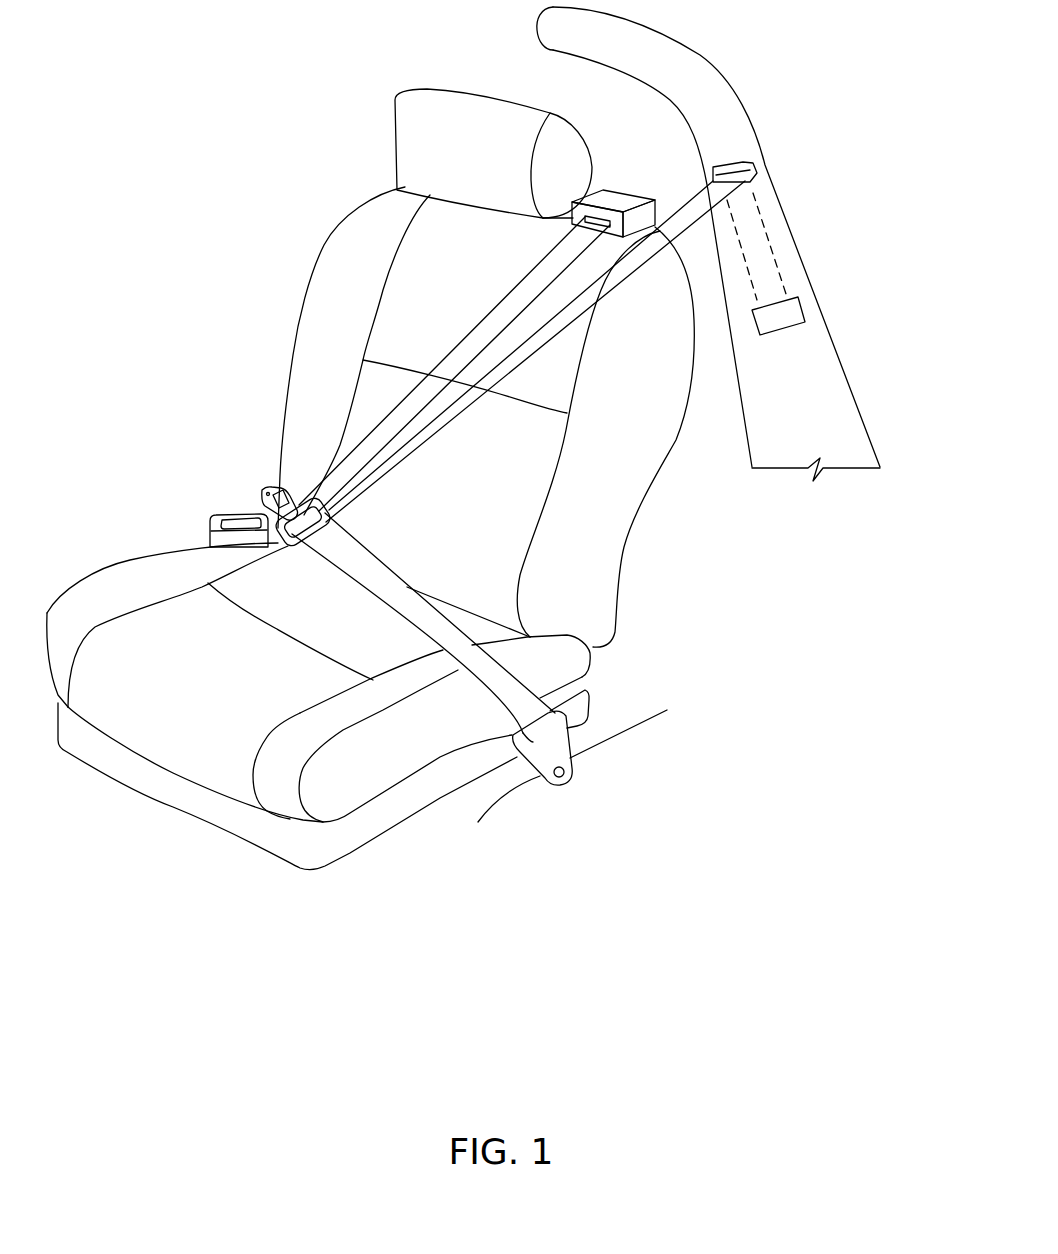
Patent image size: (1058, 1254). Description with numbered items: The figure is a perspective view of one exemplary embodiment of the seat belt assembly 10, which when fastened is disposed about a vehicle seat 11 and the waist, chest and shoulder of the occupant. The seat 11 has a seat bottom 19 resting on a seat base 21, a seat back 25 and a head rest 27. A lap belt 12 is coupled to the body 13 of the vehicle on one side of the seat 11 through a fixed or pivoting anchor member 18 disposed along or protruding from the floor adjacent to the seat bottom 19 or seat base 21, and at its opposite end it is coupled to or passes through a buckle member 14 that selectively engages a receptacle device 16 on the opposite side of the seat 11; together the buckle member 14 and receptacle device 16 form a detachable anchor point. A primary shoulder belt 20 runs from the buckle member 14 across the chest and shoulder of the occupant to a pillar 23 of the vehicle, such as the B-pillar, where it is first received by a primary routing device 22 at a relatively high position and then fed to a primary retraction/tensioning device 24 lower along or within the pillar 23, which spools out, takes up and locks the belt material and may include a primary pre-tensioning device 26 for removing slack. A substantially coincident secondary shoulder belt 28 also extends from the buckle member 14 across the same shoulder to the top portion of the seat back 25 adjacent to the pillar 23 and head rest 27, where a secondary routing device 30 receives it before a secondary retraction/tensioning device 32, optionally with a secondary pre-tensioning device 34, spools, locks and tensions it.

The seat belt assembly 10 is at (371, 412).
The vehicle seat 11 is at (357, 204).
The lap belt 12 is at (452, 609).
The body 13 is at (679, 702).
The buckle member 14 is at (257, 485).
The receptacle device 16 is at (201, 520).
The anchor member 18 is at (571, 788).
The seat bottom 19 is at (160, 772).
The primary shoulder belt 20 is at (627, 296).
The seat base 21 is at (235, 837).
The primary routing device 22 is at (756, 161).
The pillar 23 is at (773, 200).
The primary retraction/tensioning device 24 is at (853, 318).
The seat back 25 is at (330, 240).
The primary pre-tensioning device 26 is at (811, 315).
The head rest 27 is at (441, 95).
The secondary shoulder belt 28 is at (518, 316).
The secondary routing device 30 is at (621, 165).
The secondary retraction/tensioning device 32 is at (621, 165).
The secondary pre-tensioning device 34 is at (631, 190).